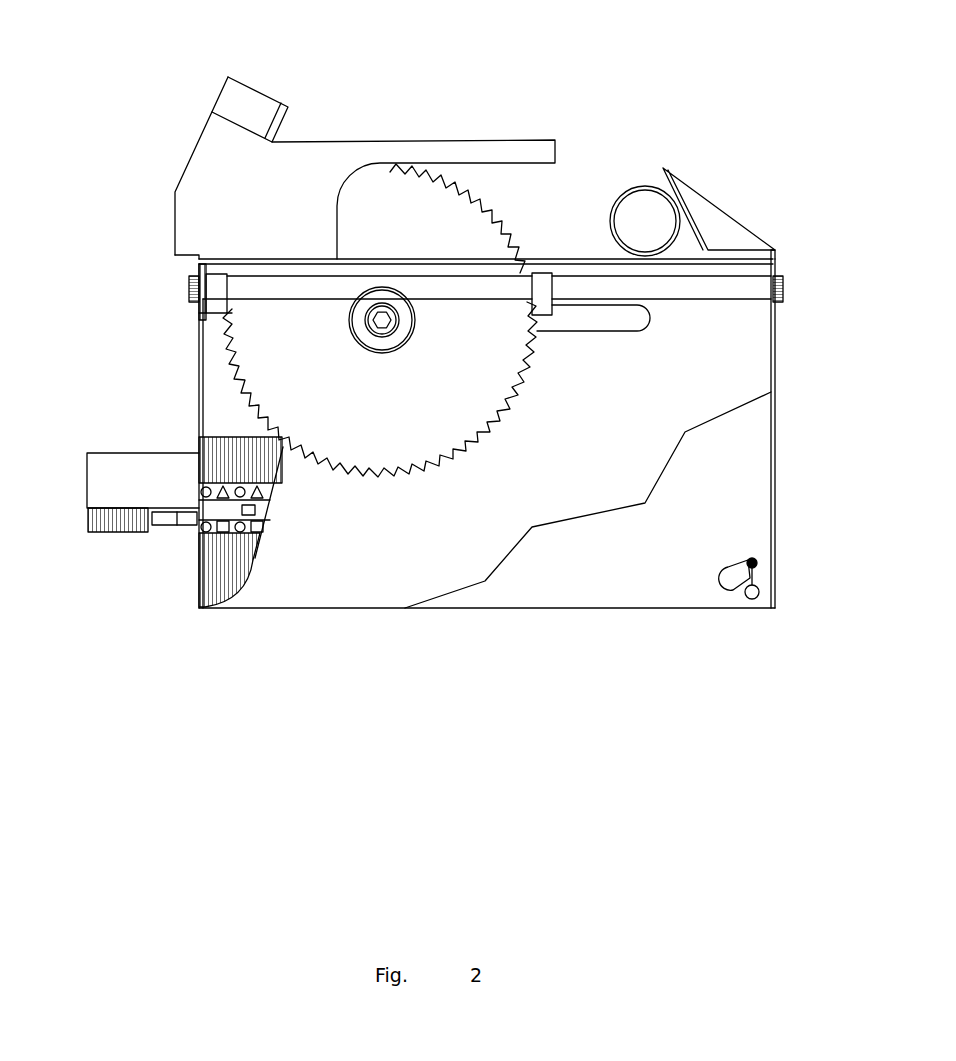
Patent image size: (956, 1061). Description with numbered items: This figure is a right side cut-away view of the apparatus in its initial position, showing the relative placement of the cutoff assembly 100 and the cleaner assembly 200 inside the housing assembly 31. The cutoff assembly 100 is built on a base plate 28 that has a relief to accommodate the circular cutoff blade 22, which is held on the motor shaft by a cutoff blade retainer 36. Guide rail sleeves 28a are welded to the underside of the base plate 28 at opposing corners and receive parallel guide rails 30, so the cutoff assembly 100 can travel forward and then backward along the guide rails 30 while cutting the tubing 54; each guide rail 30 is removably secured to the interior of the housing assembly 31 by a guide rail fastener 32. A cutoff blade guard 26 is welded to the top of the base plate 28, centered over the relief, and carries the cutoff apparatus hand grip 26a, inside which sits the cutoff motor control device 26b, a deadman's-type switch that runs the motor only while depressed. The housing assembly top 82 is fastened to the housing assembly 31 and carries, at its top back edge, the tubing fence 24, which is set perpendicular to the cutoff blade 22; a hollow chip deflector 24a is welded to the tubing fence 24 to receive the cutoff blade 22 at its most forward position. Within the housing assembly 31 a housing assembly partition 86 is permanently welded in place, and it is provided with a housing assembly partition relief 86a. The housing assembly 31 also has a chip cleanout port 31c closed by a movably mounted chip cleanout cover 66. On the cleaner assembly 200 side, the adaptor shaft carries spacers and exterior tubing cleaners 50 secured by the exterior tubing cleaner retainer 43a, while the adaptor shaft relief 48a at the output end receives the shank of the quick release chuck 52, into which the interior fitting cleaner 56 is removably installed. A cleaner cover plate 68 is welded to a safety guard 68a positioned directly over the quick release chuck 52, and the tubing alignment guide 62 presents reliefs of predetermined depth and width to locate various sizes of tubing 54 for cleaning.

The cutoff assembly 100 is at (183, 124).
The cleaner assembly 200 is at (122, 422).
The circular cutoff blade 22 is at (412, 435).
The tubing fence 24 is at (775, 250).
The chip deflector 24a is at (708, 215).
The cutoff blade guard 26 is at (320, 153).
The cutoff apparatus hand grip 26a is at (252, 95).
The cutoff motor control device 26b is at (293, 115).
The base plate 28 is at (553, 264).
The guide rail sleeve 28a is at (217, 302).
The guide rail 30 is at (318, 292).
The housing assembly 31 is at (740, 537).
The chip cleanout port 31c is at (759, 592).
The guide rail fastener 32 is at (190, 283).
The cutoff blade retainer 36 is at (390, 328).
The exterior tubing cleaner retainer 43a is at (197, 492).
The adaptor shaft relief 48a is at (265, 502).
The exterior tubing cleaner 50 is at (252, 563).
The quick release chuck 52 is at (197, 523).
The tubing 54 is at (635, 190).
The interior fitting cleaner 56 is at (88, 525).
The tubing alignment guide 62 is at (213, 395).
The chip cleanout cover 66 is at (725, 582).
The cleaner cover plate 68 is at (197, 598).
The safety guard 68a is at (103, 472).
The housing assembly top 82 is at (253, 257).
The housing assembly partition 86 is at (720, 347).
The housing assembly partition relief 86a is at (600, 322).